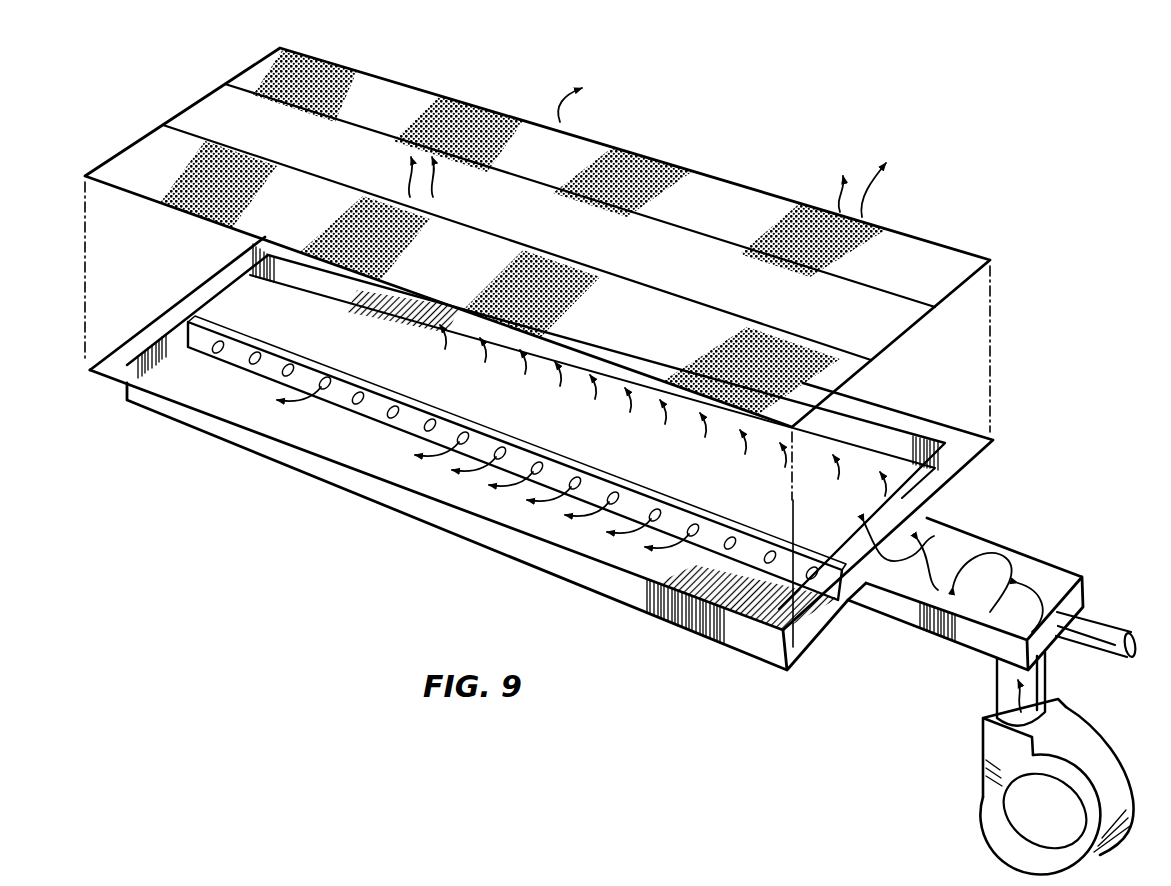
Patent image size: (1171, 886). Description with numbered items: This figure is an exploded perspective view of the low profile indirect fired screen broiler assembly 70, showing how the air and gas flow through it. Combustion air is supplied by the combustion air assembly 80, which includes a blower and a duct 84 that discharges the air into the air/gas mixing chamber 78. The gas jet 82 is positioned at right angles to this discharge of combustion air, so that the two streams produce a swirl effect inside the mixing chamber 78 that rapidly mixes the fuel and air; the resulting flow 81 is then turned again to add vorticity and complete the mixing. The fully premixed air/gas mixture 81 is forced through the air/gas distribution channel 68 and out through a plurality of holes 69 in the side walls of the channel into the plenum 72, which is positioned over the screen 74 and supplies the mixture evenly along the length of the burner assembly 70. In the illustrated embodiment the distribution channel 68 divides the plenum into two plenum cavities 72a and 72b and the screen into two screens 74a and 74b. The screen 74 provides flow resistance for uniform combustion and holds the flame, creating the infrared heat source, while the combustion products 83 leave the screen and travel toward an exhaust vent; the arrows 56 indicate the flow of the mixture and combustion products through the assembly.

The apertures / air flow arrows 56 is at (436, 192).
The air/gas distribution channel 68 is at (537, 414).
The holes 69 is at (497, 462).
The low profile indirect fired screen broiler assembly 70 is at (96, 156).
The plenum 72 is at (152, 433).
The plenum cavity 72a is at (240, 398).
The plenum cavity 72b is at (906, 478).
The screen 74 is at (944, 226).
The screen 74a is at (212, 162).
The screen 74b is at (398, 90).
The air/gas mixing chamber 78 is at (908, 614).
The combustion air assembly 80 is at (974, 778).
The air/gas mixture flow 81 is at (305, 397).
The gas jet 82 is at (1110, 634).
The products of combustion 83 is at (566, 118).
The duct 84 is at (1000, 690).